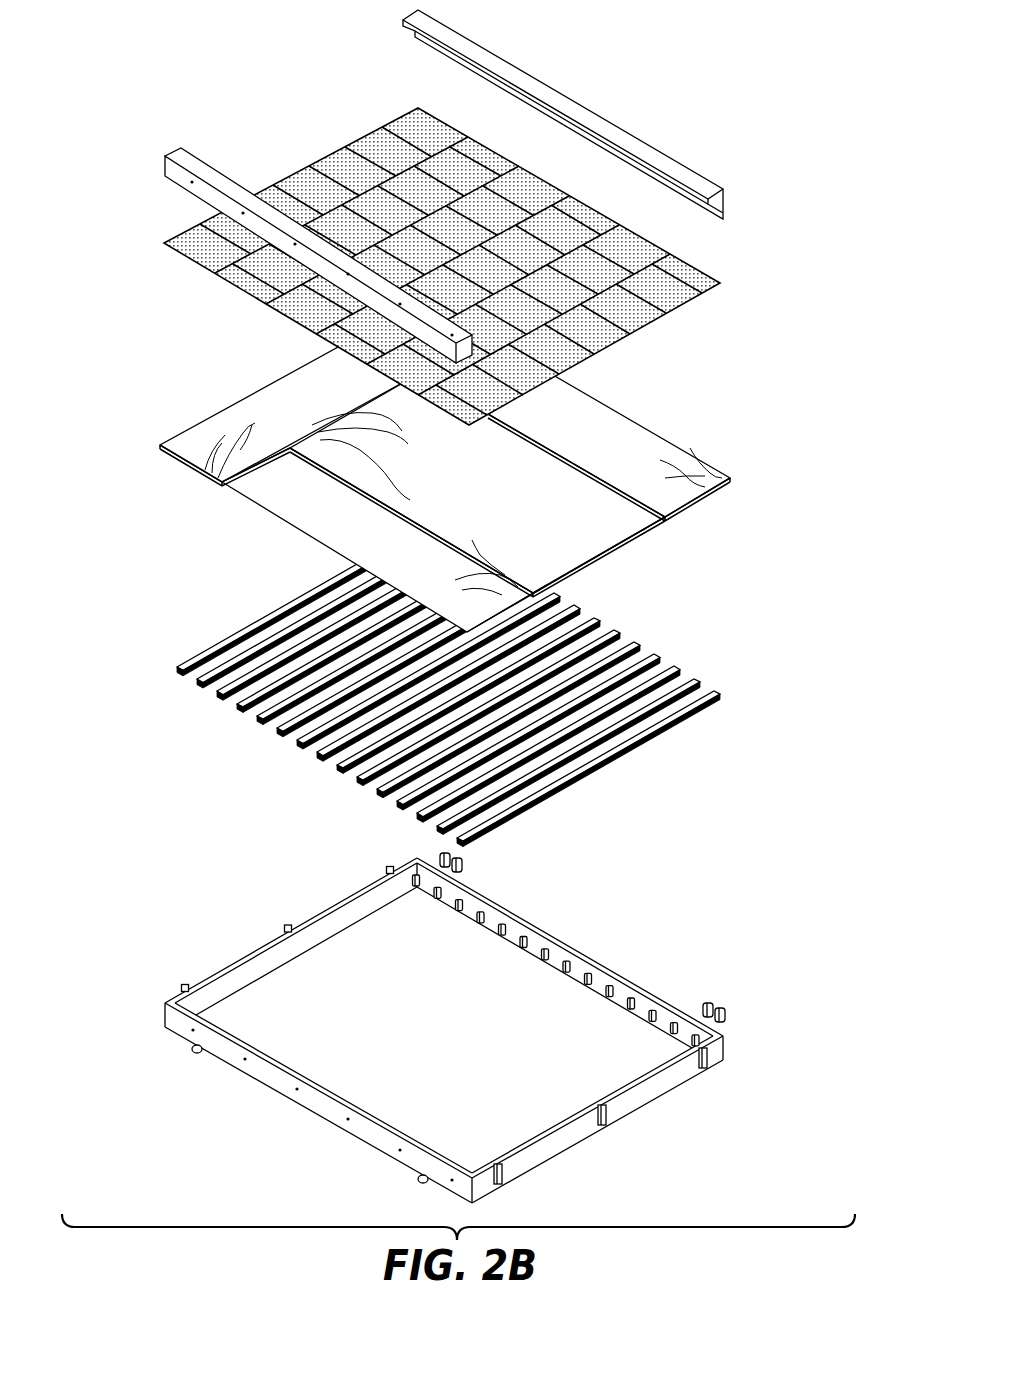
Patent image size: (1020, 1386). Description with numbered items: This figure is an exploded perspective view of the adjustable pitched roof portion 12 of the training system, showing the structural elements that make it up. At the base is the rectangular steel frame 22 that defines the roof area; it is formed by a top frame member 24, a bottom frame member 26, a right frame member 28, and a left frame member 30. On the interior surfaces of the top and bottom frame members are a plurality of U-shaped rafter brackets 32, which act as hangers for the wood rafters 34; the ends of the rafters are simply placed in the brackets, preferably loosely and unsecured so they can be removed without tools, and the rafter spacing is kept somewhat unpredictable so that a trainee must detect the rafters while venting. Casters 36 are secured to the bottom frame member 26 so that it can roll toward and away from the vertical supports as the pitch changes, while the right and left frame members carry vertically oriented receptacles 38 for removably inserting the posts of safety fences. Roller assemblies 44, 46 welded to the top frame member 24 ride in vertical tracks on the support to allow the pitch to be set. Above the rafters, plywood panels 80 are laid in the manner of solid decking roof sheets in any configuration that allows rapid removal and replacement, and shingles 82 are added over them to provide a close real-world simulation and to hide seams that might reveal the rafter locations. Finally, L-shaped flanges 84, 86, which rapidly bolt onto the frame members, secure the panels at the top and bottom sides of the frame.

The adjustable pitched roof portion 12 is at (163, 31).
The rectangular steel frame 22 is at (451, 1021).
The top frame member 24 is at (510, 912).
The bottom frame member 26 is at (306, 1099).
The right frame member 28 is at (661, 1088).
The left frame member 30 is at (343, 898).
The U-shaped rafter brackets 32 is at (530, 948).
The wood rafters 34 is at (676, 628).
The casters 36 is at (196, 1054).
The receptacles 38 is at (389, 866).
The roller assembly 44 is at (720, 1006).
The roller assembly 46 is at (466, 866).
The plywood panels 80 is at (667, 574).
The shingles 82 is at (500, 162).
The L-shaped flange 84 is at (183, 185).
The L-shaped flange 86 is at (600, 122).